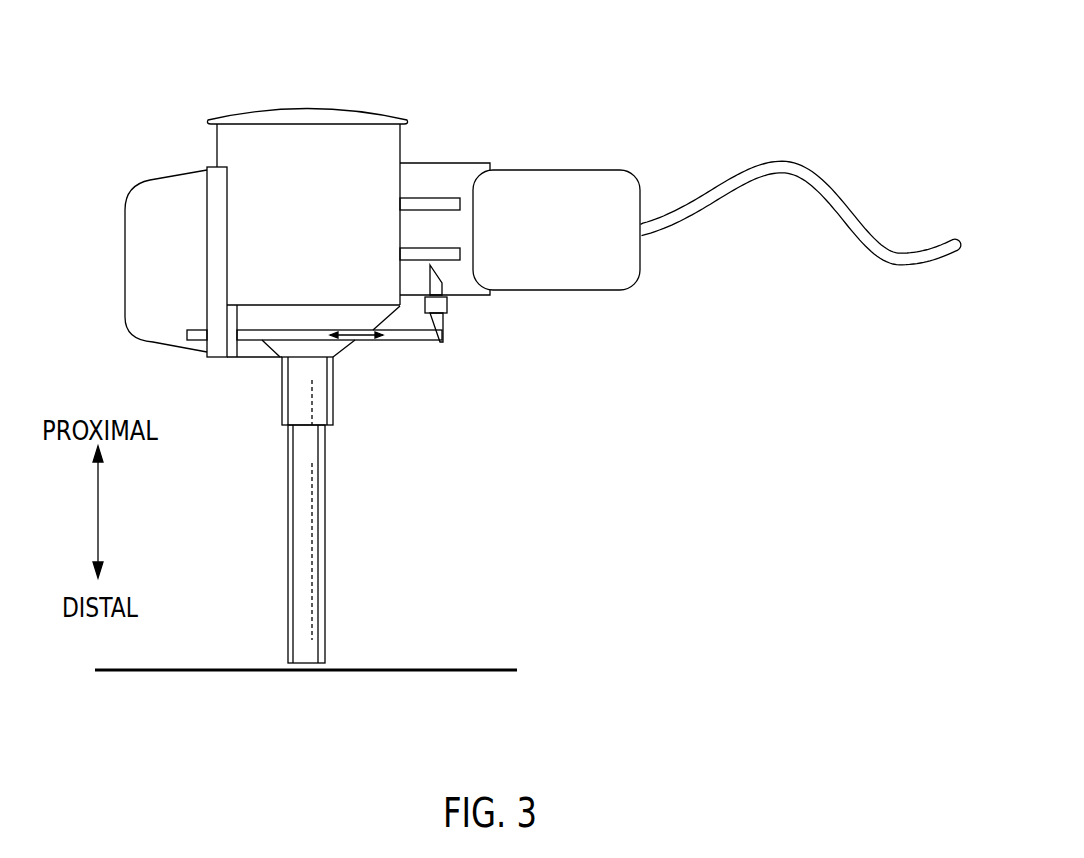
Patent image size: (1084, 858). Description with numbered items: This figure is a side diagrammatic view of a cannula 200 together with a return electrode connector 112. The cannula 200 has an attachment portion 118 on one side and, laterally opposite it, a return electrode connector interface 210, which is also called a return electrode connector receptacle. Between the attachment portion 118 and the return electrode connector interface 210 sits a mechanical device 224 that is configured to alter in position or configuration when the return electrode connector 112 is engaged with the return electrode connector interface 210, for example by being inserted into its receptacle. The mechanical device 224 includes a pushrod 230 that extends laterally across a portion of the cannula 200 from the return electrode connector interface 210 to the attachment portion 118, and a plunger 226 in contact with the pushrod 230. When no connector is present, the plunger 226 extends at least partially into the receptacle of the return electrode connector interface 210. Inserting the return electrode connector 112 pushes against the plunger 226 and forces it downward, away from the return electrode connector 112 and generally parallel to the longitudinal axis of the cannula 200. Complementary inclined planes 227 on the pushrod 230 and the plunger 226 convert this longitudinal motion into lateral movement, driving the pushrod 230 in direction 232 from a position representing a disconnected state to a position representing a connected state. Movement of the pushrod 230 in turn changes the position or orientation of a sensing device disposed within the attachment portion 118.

The cannula 200 is at (277, 72).
The attachment portion 118 is at (140, 258).
The return electrode connector interface 210 is at (430, 173).
The return electrode connector 112 is at (620, 178).
The plunger 226 is at (447, 318).
The complementary inclined planes 227 is at (437, 345).
The direction 232 is at (423, 359).
The pushrod 230 is at (270, 336).
The mechanical device 224 is at (490, 362).